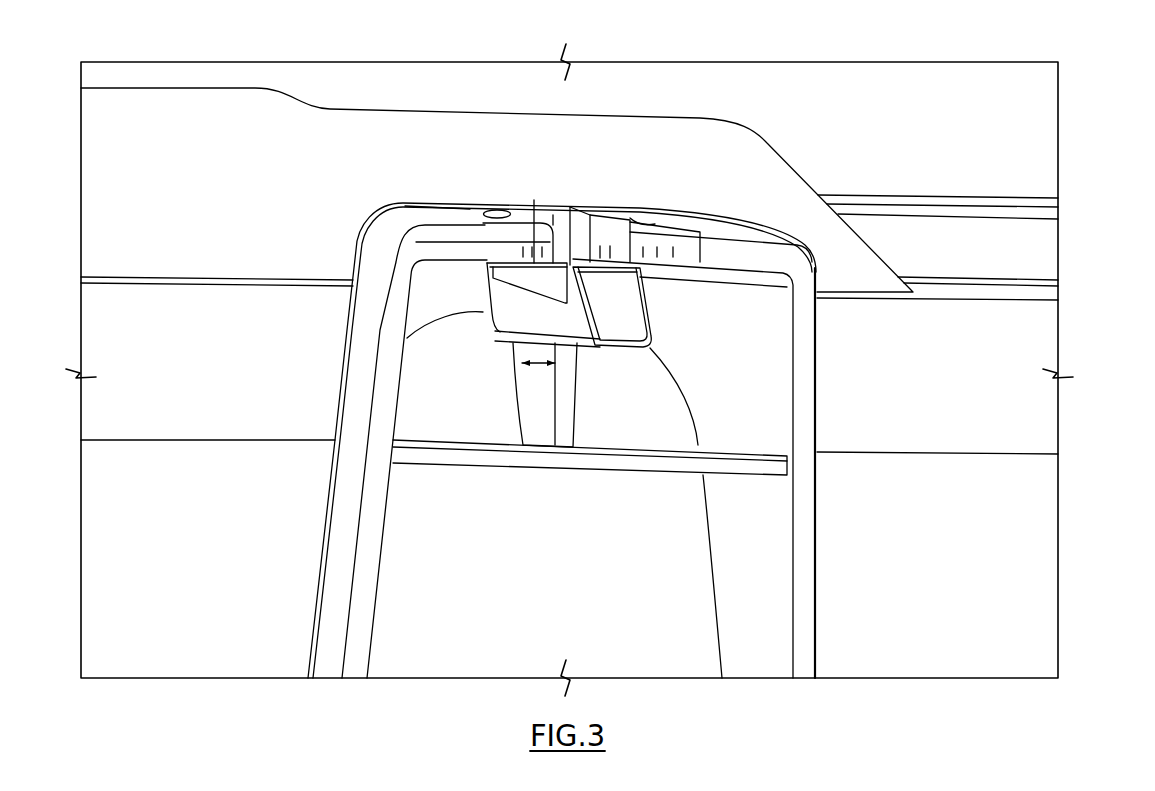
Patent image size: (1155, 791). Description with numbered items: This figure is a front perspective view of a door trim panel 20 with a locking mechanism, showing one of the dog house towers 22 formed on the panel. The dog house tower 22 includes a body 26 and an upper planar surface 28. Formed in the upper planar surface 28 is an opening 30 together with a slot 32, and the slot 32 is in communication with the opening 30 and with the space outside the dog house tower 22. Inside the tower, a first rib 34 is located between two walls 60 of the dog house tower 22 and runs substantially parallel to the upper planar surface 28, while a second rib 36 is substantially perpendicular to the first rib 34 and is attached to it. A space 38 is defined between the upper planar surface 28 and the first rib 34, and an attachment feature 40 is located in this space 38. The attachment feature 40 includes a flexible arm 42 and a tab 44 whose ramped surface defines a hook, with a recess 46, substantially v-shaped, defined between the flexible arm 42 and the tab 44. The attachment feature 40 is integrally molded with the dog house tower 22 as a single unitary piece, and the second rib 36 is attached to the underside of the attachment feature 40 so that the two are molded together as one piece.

The door trim panel 20 is at (1092, 87).
The dog house tower 22 is at (375, 266).
The body 26 is at (805, 387).
The upper planar surface 28 is at (438, 216).
The opening 30 is at (553, 215).
The slot 32 is at (598, 245).
The first rib 34 is at (420, 440).
The second rib 36 is at (522, 408).
The space 38 is at (668, 417).
The attachment feature 40 is at (513, 297).
The flexible arm 42 is at (510, 315).
The tab 44 is at (620, 298).
The recess 46 is at (558, 300).
The walls 60 is at (800, 466).